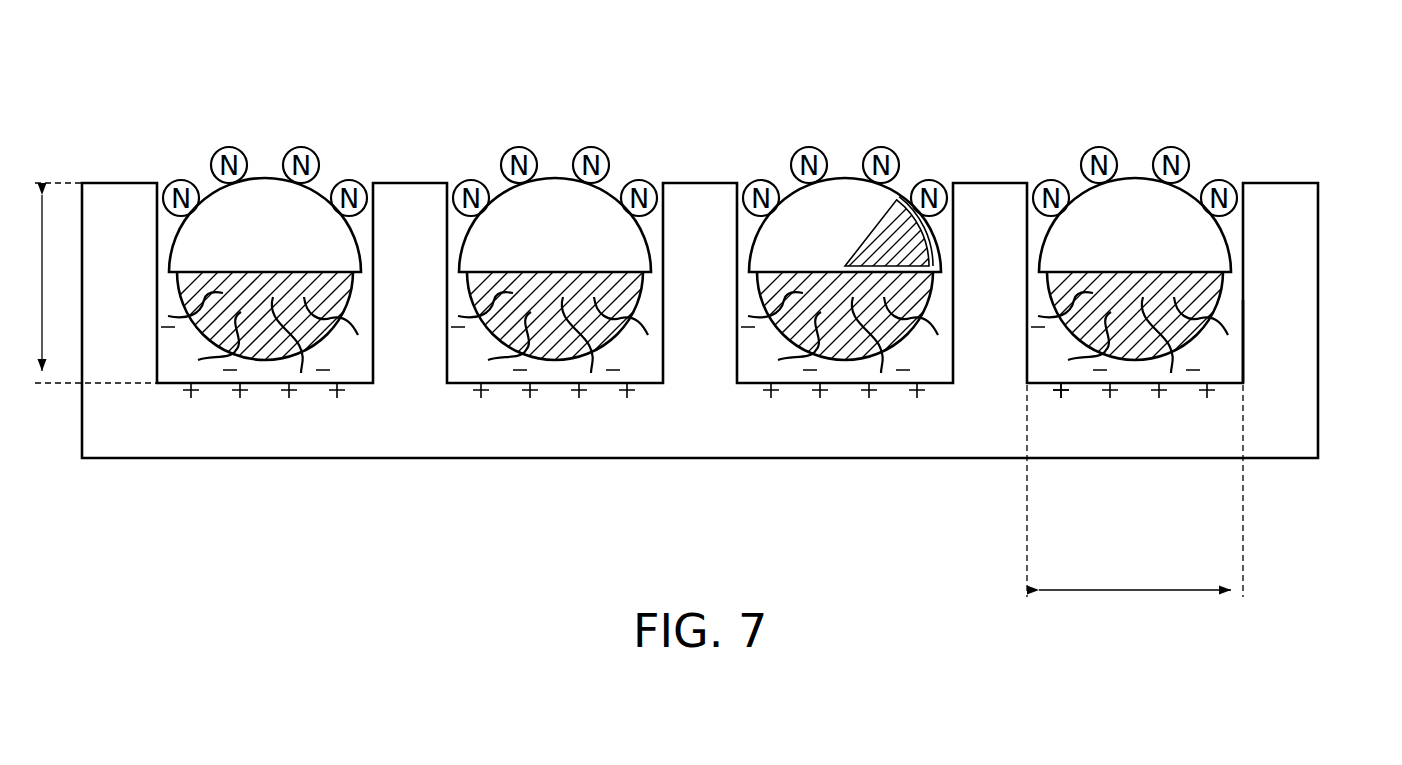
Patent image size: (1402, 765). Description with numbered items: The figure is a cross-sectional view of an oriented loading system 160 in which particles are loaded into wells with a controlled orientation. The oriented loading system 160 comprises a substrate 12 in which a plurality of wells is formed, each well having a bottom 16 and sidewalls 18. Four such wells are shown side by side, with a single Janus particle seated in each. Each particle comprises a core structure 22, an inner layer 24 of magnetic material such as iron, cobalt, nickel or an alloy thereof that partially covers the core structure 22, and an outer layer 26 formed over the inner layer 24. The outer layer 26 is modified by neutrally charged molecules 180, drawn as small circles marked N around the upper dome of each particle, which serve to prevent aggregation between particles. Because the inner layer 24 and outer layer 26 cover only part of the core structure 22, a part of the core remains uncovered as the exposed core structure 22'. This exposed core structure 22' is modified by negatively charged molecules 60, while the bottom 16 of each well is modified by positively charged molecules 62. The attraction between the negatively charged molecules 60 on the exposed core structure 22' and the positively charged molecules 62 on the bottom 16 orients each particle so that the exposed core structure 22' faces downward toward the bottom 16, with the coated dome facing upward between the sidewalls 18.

The oriented loading system 160 is at (1332, 86).
The substrate 12 is at (1305, 437).
The bottom 16 is at (1307, 341).
The sidewall 18 is at (1135, 180).
The core structure 22 is at (850, 394).
The exposed core structure 22' is at (1140, 395).
The inner layer 24 is at (922, 198).
The outer layer 26 is at (828, 194).
The negatively charged molecules 60 is at (1213, 312).
The positively charged molecules 62 is at (1136, 456).
The neutrally charged molecules 180 is at (845, 142).